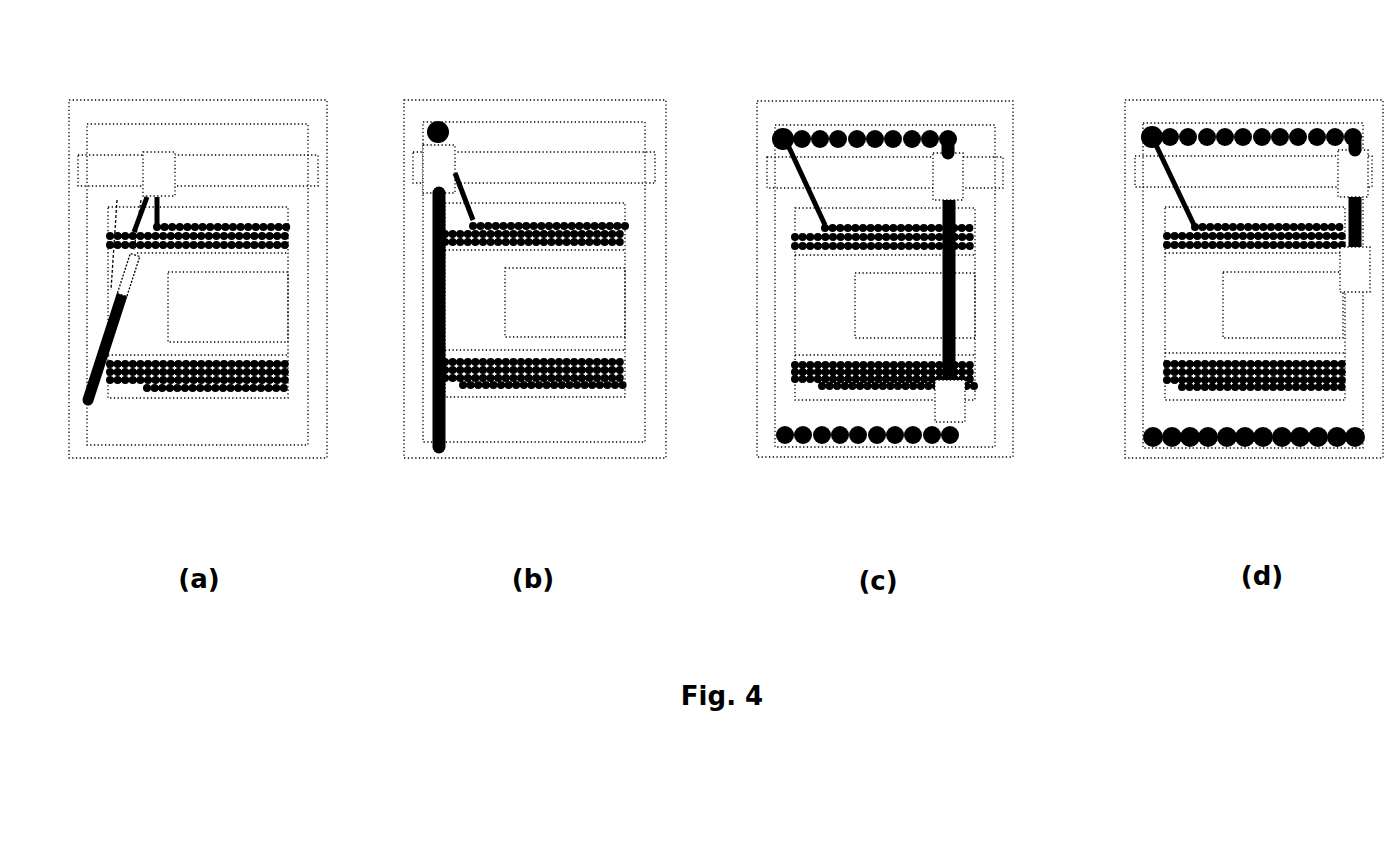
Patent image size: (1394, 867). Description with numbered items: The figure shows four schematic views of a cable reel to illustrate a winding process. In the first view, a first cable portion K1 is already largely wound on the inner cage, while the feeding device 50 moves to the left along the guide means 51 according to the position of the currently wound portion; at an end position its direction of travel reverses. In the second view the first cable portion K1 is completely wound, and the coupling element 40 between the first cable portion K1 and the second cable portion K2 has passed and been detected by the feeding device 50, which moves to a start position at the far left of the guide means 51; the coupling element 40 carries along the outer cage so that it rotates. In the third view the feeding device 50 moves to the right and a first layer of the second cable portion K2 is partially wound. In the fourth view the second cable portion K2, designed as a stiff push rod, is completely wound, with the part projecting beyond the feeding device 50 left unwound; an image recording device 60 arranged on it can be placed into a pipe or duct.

The coupling element 40 is at (127, 273).
The feeding device 50 is at (162, 160).
The guide means 51 is at (268, 160).
The image recording device 60 is at (1348, 273).
The first cable portion K1 is at (278, 222).
The second cable portion K2 is at (447, 207).